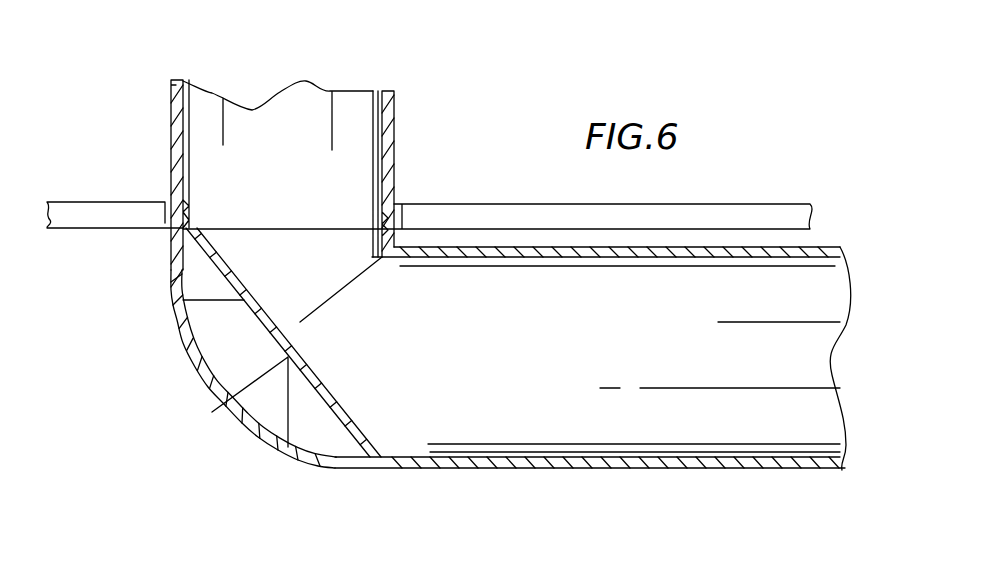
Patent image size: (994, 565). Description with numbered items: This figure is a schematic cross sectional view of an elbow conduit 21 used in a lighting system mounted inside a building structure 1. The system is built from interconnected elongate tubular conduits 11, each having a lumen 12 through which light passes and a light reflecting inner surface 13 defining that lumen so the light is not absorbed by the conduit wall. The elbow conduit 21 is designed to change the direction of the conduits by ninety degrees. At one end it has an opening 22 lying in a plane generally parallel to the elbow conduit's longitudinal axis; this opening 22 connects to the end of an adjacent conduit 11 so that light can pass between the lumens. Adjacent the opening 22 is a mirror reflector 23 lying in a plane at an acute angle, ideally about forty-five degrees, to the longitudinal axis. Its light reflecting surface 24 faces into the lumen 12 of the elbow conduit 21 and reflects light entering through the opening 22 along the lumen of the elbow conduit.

The building structure 1 is at (83, 217).
The elongate tubular conduit 11 is at (393, 125).
The lumen 12 is at (313, 117).
The light reflecting inner surface 13 is at (189, 175).
The elbow conduit 21 is at (440, 468).
The opening 22 is at (290, 247).
The mirror reflector 23 is at (227, 402).
The light reflecting surface 24 is at (336, 410).